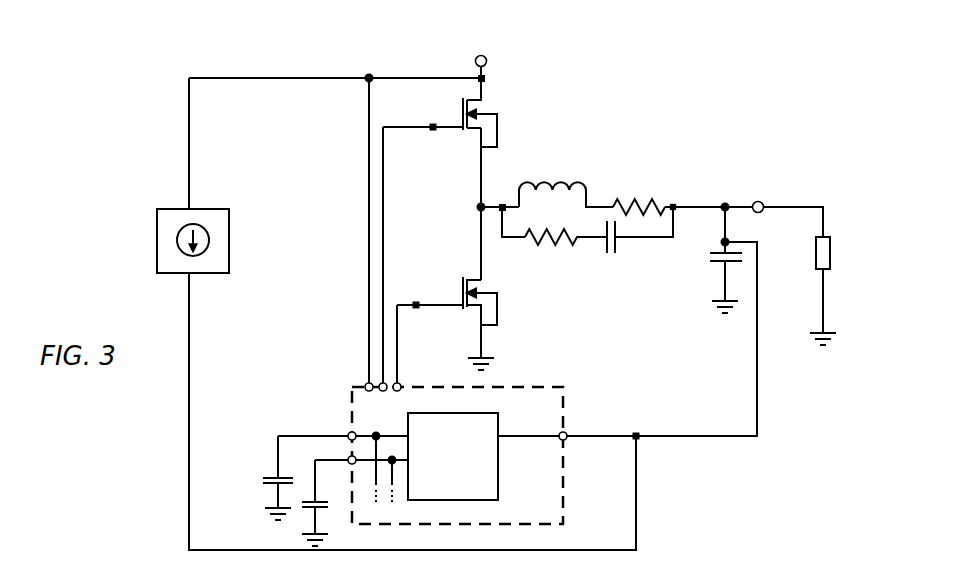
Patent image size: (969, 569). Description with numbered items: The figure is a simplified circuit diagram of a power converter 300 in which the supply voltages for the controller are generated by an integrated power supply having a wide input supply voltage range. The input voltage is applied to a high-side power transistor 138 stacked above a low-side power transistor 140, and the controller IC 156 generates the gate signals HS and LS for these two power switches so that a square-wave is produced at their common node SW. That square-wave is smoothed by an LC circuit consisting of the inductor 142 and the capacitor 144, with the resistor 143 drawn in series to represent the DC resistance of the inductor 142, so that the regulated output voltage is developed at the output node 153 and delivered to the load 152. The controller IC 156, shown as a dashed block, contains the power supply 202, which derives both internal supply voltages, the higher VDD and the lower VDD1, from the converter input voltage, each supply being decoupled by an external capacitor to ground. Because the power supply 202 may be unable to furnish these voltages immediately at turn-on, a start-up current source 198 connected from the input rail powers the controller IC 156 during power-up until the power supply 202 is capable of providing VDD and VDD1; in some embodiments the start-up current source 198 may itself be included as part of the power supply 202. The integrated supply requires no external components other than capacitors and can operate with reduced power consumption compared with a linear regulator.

The high-side power transistor 138 is at (487, 108).
The low-side power transistor 140 is at (488, 280).
The inductor 142 is at (543, 185).
The resistor 143 is at (635, 202).
The capacitor 144 is at (718, 261).
The load 152 is at (816, 258).
The output node 153 is at (727, 204).
The controller IC 156 is at (449, 464).
The start-up current source 198 is at (197, 208).
The power supply 202 is at (498, 418).
The power converter 300 is at (658, 118).